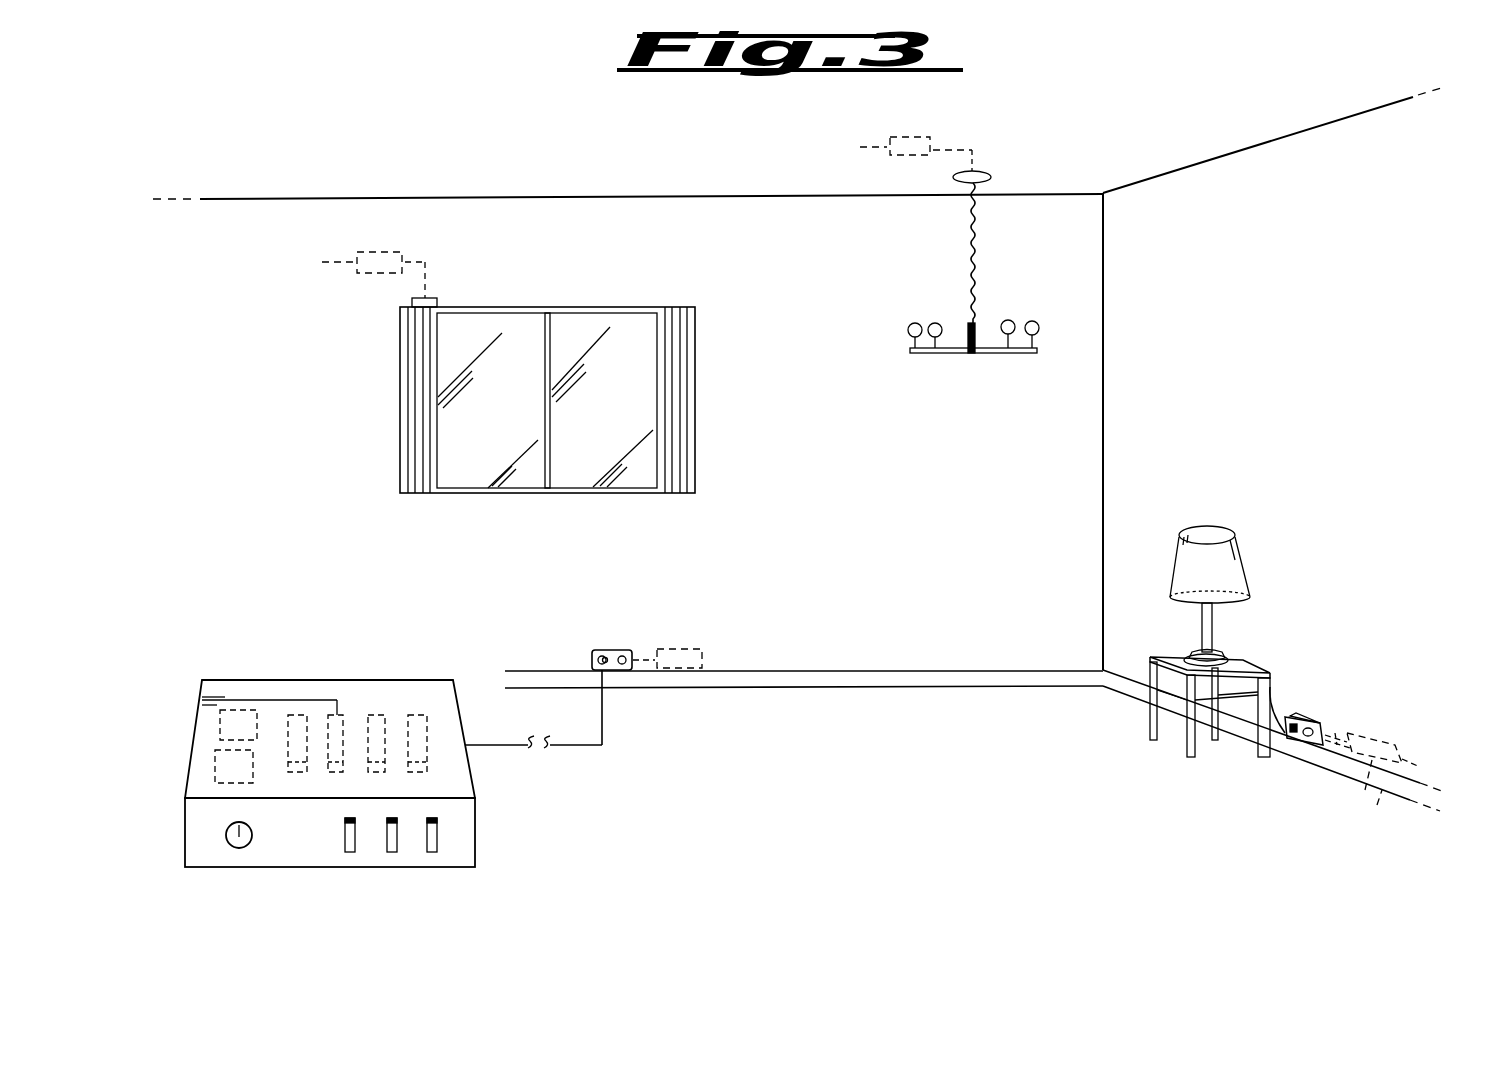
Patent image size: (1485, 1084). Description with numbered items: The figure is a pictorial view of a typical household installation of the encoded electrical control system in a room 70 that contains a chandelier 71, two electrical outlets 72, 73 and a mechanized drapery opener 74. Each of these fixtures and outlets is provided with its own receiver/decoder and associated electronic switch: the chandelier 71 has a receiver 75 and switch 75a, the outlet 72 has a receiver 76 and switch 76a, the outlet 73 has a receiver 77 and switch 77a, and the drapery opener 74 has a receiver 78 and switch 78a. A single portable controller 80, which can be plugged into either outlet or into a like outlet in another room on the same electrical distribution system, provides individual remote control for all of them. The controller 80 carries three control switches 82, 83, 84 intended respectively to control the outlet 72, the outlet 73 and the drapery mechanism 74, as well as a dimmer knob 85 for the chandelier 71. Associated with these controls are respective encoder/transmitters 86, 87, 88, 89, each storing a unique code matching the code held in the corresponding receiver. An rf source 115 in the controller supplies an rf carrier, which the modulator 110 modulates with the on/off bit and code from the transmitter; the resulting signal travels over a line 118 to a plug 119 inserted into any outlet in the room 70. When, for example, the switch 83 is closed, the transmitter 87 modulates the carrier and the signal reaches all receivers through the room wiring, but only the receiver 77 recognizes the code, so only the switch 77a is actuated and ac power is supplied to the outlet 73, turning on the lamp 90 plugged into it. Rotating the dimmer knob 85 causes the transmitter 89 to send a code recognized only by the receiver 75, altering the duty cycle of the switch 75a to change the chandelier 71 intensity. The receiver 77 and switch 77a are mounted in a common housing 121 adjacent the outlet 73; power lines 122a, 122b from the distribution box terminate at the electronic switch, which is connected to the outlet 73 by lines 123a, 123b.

The room 70 is at (981, 519).
The chandelier 71 is at (972, 357).
The electrical outlet 72 is at (601, 628).
The electrical outlet 73 is at (1295, 742).
The mechanized drapery opener 74 is at (440, 299).
The receiver/decoder 75 is at (916, 134).
The electronic switch 75a is at (910, 140).
The receiver/decoder 76 is at (691, 637).
The electronic switch 76a is at (677, 652).
The receiver/decoder 77 is at (1372, 722).
The electronic switch 77a is at (1372, 750).
The receiver/decoder 78 is at (374, 256).
The electronic switch 78a is at (381, 256).
The portable controller 80 is at (299, 766).
The control switch 82 is at (350, 855).
The control switch 83 is at (394, 855).
The control switch 84 is at (432, 855).
The dimmer knob 85 is at (228, 845).
The encoder/transmitter 86 is at (338, 712).
The encoder/transmitter 87 is at (376, 716).
The encoder/transmitter 88 is at (420, 718).
The encoder/transmitter 89 is at (283, 718).
The lamp 90 is at (1178, 590).
The modulator 110 is at (218, 722).
The rf source 115 is at (215, 763).
The line 118 is at (603, 735).
The plug 119 is at (628, 611).
The common housing 121 is at (1345, 770).
The power line 122a is at (1360, 792).
The power line 122b is at (1373, 782).
The line 123a is at (1358, 686).
The line 123b is at (1335, 733).